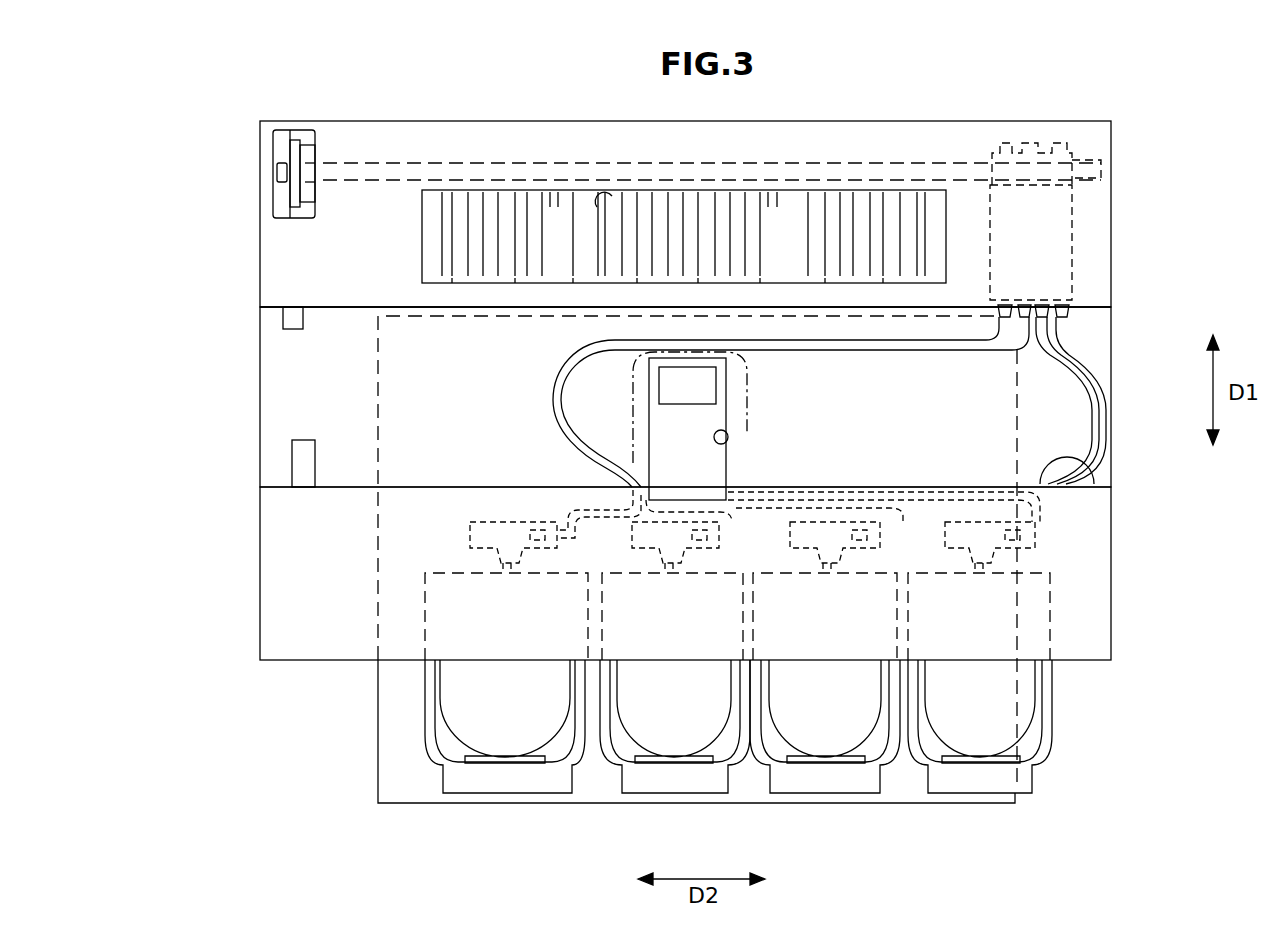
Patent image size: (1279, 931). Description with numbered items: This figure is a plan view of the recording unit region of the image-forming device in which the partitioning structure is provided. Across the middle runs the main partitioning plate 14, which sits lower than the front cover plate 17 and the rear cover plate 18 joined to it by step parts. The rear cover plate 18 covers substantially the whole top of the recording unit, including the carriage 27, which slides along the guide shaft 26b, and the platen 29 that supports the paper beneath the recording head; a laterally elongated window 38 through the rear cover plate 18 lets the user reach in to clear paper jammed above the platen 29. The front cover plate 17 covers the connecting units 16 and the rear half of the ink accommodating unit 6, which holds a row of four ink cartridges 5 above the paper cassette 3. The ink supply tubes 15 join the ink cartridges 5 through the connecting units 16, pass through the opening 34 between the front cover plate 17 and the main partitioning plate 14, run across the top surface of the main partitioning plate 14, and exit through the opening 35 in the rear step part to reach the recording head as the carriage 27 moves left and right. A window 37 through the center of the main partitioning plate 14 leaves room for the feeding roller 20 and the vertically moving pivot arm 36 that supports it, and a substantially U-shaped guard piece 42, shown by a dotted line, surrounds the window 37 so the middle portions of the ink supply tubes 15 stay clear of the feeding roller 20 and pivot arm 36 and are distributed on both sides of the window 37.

The paper cassette 3 is at (385, 737).
The ink cartridges 5 is at (512, 740).
The ink accommodating unit 6 is at (425, 736).
The main partitioning plate 14 is at (287, 404).
The ink supply tubes 15 is at (553, 414).
The connecting units 16 is at (470, 532).
The front cover plate 17 is at (297, 557).
The rear cover plate 18 is at (287, 250).
The feeding roller 20 is at (700, 392).
The guide shaft 26b is at (385, 178).
The carriage 27 is at (1072, 281).
The platen 29 is at (793, 223).
The opening 34 is at (1080, 468).
The opening 35 is at (350, 307).
The pivot arm 36 is at (716, 474).
The window 37 is at (728, 444).
The window 38 is at (612, 196).
The guard piece 42 is at (633, 395).